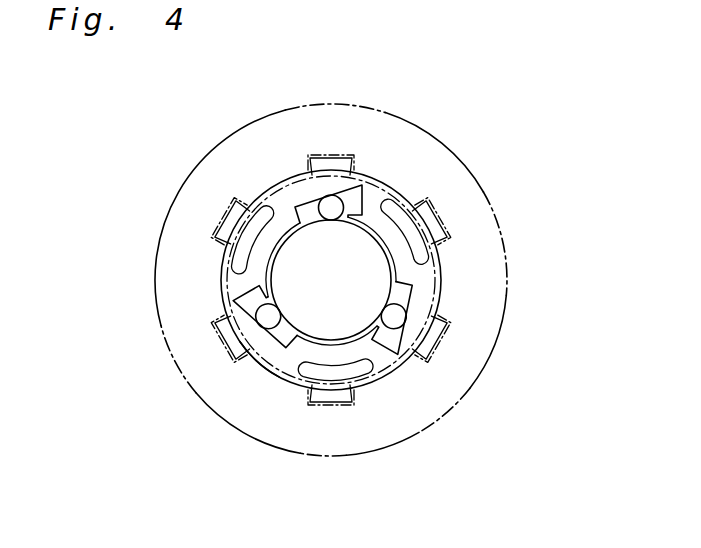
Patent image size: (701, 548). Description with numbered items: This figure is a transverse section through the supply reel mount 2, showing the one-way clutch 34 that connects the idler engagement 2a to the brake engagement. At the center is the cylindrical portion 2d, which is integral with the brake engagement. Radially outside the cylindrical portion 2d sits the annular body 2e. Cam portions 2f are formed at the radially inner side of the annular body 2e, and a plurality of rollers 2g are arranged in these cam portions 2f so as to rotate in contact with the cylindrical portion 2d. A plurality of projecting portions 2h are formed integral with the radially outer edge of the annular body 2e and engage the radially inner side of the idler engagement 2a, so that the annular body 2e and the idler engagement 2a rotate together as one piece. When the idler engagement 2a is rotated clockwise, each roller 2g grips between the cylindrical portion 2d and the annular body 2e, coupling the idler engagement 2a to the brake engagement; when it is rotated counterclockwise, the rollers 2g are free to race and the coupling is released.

The supply reel mount 2 is at (400, 108).
The idler engagement 2a is at (443, 163).
The projecting portions 2h is at (428, 221).
The cylindrical portion 2d is at (297, 276).
The cam portions 2f is at (430, 295).
The annular body 2e is at (255, 358).
The one-way clutch 34 is at (278, 375).
The rollers 2g is at (393, 320).